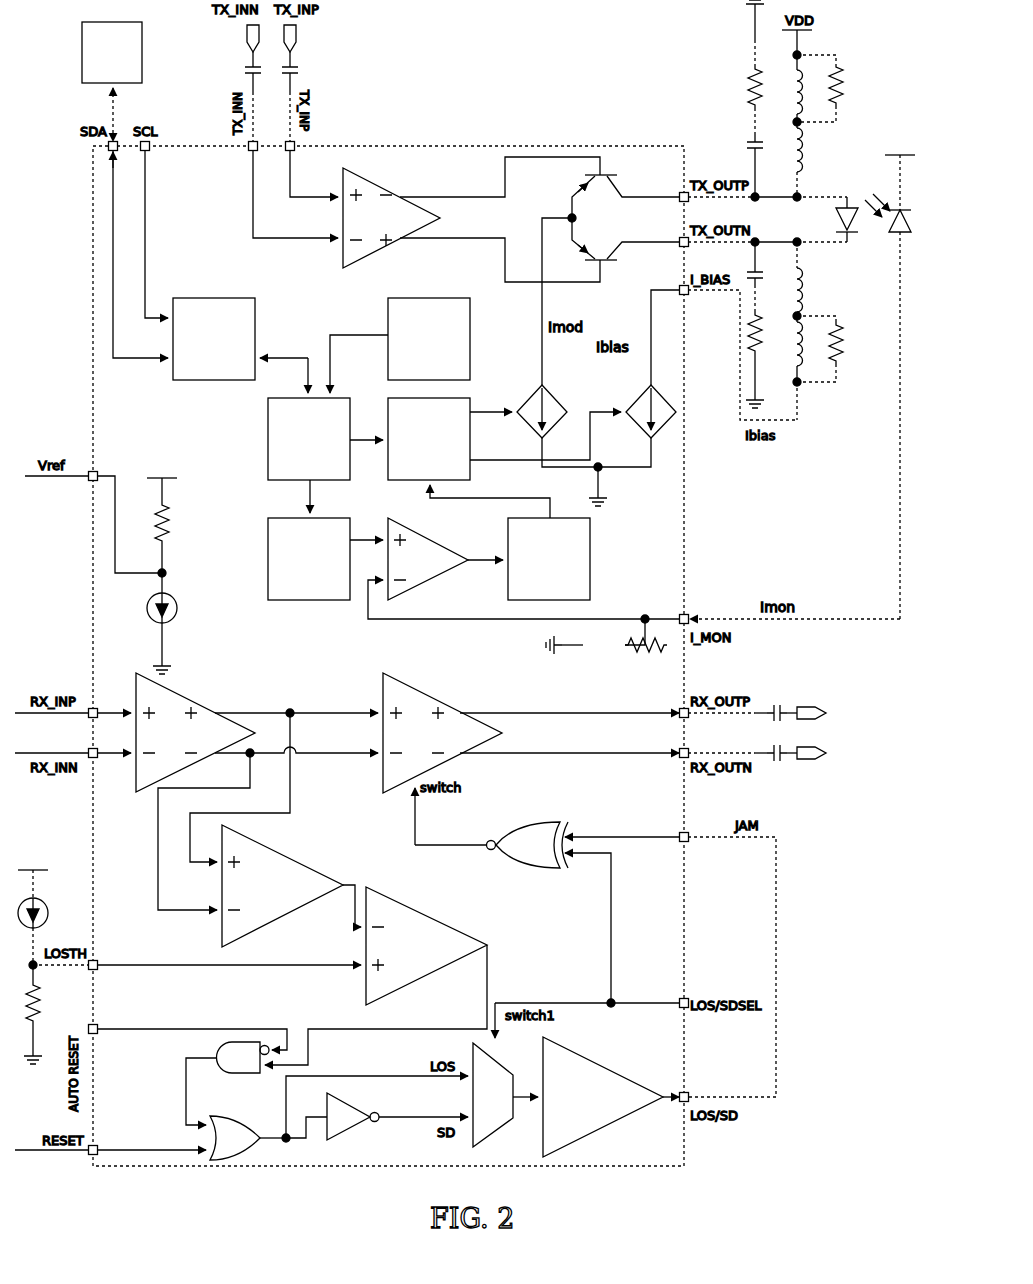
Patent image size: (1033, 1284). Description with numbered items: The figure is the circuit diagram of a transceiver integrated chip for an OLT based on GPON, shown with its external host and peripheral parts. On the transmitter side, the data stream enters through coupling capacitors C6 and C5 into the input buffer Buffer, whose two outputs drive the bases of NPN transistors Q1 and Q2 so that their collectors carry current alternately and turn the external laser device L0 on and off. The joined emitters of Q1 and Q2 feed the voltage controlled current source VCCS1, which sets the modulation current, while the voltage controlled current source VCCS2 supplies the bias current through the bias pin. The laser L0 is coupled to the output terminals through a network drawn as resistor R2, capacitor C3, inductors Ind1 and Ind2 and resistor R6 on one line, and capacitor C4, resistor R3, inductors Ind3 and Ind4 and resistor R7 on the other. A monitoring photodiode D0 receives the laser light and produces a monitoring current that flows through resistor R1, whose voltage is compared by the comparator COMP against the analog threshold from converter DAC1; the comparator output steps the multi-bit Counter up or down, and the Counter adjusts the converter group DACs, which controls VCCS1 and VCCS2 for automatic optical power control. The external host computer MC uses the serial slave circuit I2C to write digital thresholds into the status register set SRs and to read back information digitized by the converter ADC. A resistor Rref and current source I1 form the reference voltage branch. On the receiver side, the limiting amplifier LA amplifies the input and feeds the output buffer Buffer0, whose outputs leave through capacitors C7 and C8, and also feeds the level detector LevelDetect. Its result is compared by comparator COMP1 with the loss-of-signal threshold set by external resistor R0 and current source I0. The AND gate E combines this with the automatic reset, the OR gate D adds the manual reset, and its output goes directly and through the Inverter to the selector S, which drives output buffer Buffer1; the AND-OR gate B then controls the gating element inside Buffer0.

The host computer MC is at (112, 81).
The coupling capacitor C6 is at (243, 83).
The coupling capacitor C5 is at (299, 83).
The input buffer Buffer is at (391, 218).
The NPN transistor Q1 is at (625, 195).
The NPN transistor Q2 is at (625, 239).
The voltage controlled current source VCCS1 is at (553, 405).
The voltage controlled current source VCCS2 is at (634, 417).
The I²C circuit of the I²C slave I2C is at (214, 339).
The analog-to-digital converter ADC is at (429, 339).
The status register set SRs is at (309, 439).
The digital-to-analog converter group DACs is at (429, 439).
The digital-to-analog converter DAC1 is at (309, 559).
The counter Counter is at (549, 559).
The voltage comparator COMP is at (428, 559).
The resistor R1 is at (606, 634).
The resistor R2 is at (745, 67).
The capacitor C3 is at (745, 166).
The inductor Ind1 is at (781, 88).
The inductor Ind2 is at (781, 159).
The resistor R6 is at (832, 88).
The laser device L0 is at (835, 219).
The monitoring photodiode D0 is at (898, 378).
The capacitor C4 is at (762, 263).
The resistor R3 is at (761, 346).
The inductor Ind3 is at (782, 279).
The inductor Ind4 is at (781, 349).
The resistor R7 is at (832, 349).
The resistor Rref is at (174, 516).
The current source I1 is at (171, 623).
The limiting amplifier LA is at (195, 732).
The output buffer Buffer0 is at (442, 733).
The capacitor C7 is at (788, 705).
The capacitor C8 is at (789, 762).
The AND-OR logic gate B is at (528, 845).
The operational amplifier Level Detect LevelDetect is at (282, 886).
The voltage comparator COMP1 is at (426, 946).
The current source I0 is at (42, 908).
The external resistance R0 is at (44, 1014).
The AND logic gate E is at (242, 1057).
The OR logic gate D is at (235, 1138).
The inverter Inverter is at (345, 1129).
The selector S is at (493, 1095).
The output buffer Buffer1 is at (603, 1097).